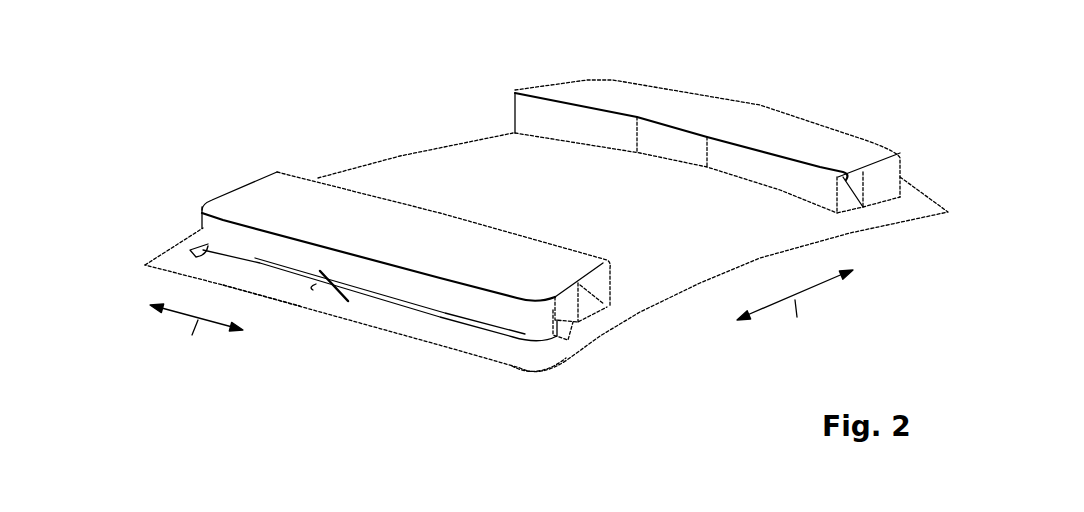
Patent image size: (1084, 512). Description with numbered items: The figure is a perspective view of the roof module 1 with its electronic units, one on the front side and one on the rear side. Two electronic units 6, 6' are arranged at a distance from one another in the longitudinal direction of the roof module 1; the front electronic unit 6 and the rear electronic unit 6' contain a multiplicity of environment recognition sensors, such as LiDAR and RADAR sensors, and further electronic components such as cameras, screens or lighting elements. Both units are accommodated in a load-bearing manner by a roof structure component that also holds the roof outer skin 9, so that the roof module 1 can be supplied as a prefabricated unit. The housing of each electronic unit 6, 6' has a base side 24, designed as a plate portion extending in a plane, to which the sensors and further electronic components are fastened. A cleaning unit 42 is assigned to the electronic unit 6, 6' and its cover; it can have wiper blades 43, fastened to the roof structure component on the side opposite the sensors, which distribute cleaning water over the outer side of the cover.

The roof module 1 is at (433, 400).
The front electronic unit 6 is at (400, 226).
The rear electronic unit 6' is at (707, 116).
The roof outer skin 9 is at (746, 247).
The base side 24 is at (527, 362).
The cleaning unit 42 is at (222, 277).
The wiper blades 43 is at (327, 292).